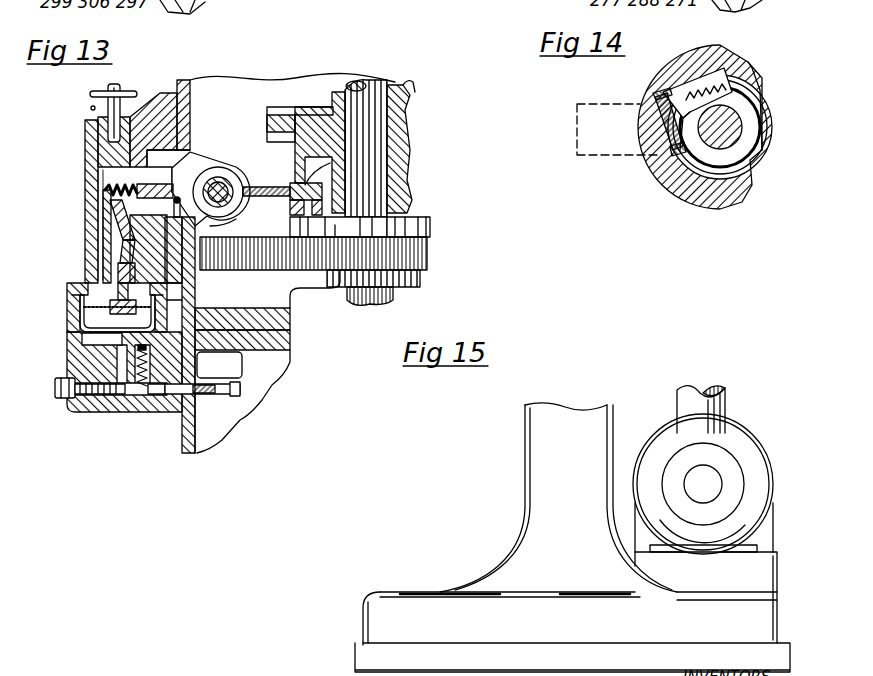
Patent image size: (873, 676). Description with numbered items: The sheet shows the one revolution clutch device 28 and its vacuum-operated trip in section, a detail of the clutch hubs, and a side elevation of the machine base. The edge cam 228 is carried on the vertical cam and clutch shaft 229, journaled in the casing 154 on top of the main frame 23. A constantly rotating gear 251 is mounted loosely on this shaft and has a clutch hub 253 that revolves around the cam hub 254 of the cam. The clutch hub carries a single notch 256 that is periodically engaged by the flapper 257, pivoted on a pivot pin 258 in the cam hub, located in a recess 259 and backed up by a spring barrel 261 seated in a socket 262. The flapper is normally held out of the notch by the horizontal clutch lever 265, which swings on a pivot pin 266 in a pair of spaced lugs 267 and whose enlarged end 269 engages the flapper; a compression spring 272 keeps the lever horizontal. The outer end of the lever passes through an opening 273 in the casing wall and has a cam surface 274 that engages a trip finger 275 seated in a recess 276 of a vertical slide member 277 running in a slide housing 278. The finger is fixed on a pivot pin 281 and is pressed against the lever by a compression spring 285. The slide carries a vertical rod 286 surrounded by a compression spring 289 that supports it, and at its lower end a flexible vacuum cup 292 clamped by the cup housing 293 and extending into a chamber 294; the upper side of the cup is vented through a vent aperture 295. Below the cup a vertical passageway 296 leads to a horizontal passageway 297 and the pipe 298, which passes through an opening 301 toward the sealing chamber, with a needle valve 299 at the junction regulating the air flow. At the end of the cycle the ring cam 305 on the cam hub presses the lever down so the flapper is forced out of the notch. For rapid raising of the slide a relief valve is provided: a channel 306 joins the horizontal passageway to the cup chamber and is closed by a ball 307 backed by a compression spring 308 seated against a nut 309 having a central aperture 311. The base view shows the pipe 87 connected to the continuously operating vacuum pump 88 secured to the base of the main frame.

In FIG. 13, the main frame 23 is at (273, 342).
In FIG. 15, the main frame 23 is at (550, 455).
In FIG. 13, the one revolution clutch device 28 is at (418, 208).
In FIG. 14, the one revolution clutch device 28 is at (704, 210).
In FIG. 15, the pipe 87 is at (728, 403).
In FIG. 15, the vacuum pump 88 is at (748, 451).
In FIG. 13, the casing 154 is at (189, 148).
In FIG. 13, the edge cam 228 is at (275, 120).
In FIG. 13, the cam and clutch shaft 229 is at (362, 100).
In FIG. 14, the cam and clutch shaft 229 is at (743, 123).
In FIG. 13, the gear 251 is at (428, 251).
In FIG. 13, the clutch hub 253 is at (398, 227).
In FIG. 14, the clutch hub 253 is at (697, 172).
In FIG. 13, the cam hub 254 is at (390, 200).
In FIG. 14, the cam hub 254 is at (697, 190).
In FIG. 14, the notch 256 is at (649, 116).
In FIG. 13, the flapper 257 is at (323, 190).
In FIG. 14, the flapper 257 is at (668, 150).
In FIG. 14, the pivot pin 258 is at (683, 153).
In FIG. 14, the recess 259 is at (686, 135).
In FIG. 14, the spring barrel 261 is at (670, 97).
In FIG. 14, the socket 262 is at (690, 97).
In FIG. 13, the clutch lever 265 is at (262, 187).
In FIG. 14, the clutch lever 265 is at (578, 108).
In FIG. 13, the pivot pin 266 is at (218, 180).
In FIG. 13, the lugs 267 is at (195, 160).
In FIG. 13, the enlarged end 269 is at (338, 227).
In FIG. 13, the compression spring 272 is at (226, 220).
In FIG. 13, the opening 273 is at (190, 153).
In FIG. 13, the cam surface 274 is at (112, 187).
In FIG. 13, the trip finger 275 is at (113, 233).
In FIG. 13, the recess 276 is at (100, 213).
In FIG. 13, the slide member 277 is at (100, 143).
In FIG. 13, the slide housing 278 is at (88, 147).
In FIG. 13, the pivot pin 281 is at (105, 255).
In FIG. 13, the compression spring 285 is at (105, 191).
In FIG. 13, the vertical rod 286 is at (119, 87).
In FIG. 13, the compression spring 289 is at (90, 93).
In FIG. 13, the vacuum cup 292 is at (78, 308).
In FIG. 13, the cup housing 293 is at (72, 323).
In FIG. 13, the chamber 294 is at (78, 344).
In FIG. 13, the vent aperture 295 is at (75, 282).
In FIG. 13, the vertical passageway 296 is at (110, 357).
In FIG. 13, the horizontal passageway 297 is at (153, 397).
In FIG. 13, the pipe 298 is at (232, 393).
In FIG. 13, the needle valve 299 is at (97, 407).
In FIG. 13, the opening 301 is at (203, 400).
In FIG. 13, the ring cam 305 is at (297, 183).
In FIG. 13, the channel 306 is at (142, 386).
In FIG. 13, the ball 307 is at (273, 374).
In FIG. 13, the compression spring 308 is at (190, 361).
In FIG. 13, the nut 309 is at (200, 316).
In FIG. 13, the central aperture 311 is at (197, 308).